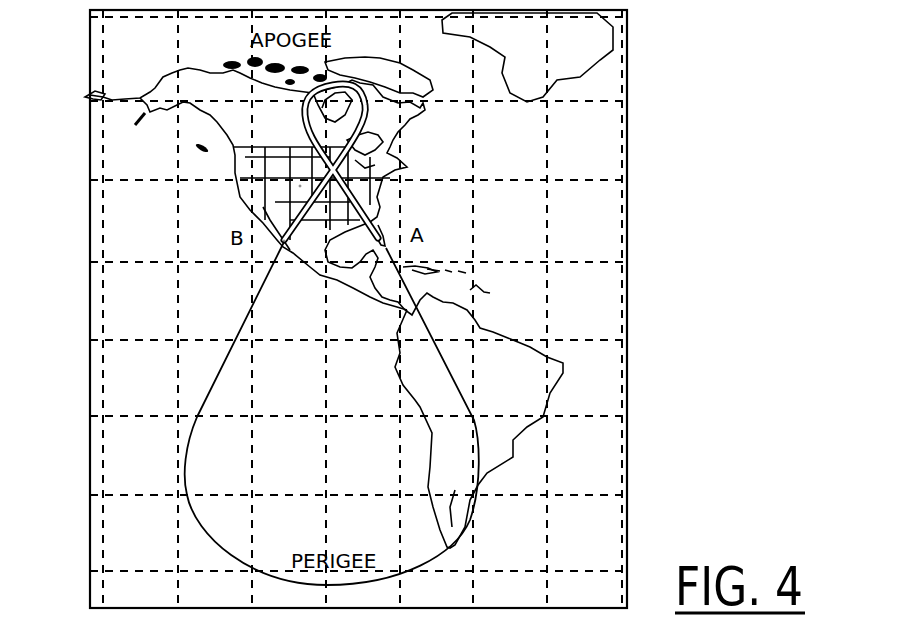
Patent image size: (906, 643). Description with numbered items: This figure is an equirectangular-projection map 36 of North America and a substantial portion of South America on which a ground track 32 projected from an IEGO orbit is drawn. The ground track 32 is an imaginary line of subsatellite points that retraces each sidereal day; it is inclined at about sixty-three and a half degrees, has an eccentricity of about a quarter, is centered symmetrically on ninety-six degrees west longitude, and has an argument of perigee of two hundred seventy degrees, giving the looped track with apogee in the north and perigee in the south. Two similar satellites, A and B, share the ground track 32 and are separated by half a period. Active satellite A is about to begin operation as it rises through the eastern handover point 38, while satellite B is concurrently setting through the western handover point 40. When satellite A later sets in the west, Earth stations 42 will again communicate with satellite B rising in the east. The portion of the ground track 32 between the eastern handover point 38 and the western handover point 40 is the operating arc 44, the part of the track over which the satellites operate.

The ground track 32 is at (360, 182).
The equirectangular-projection map 36 is at (76, 147).
The eastern handover point 38 is at (387, 250).
The western handover point 40 is at (300, 222).
The Earth stations 42 is at (300, 186).
The operating arc 44 is at (313, 141).